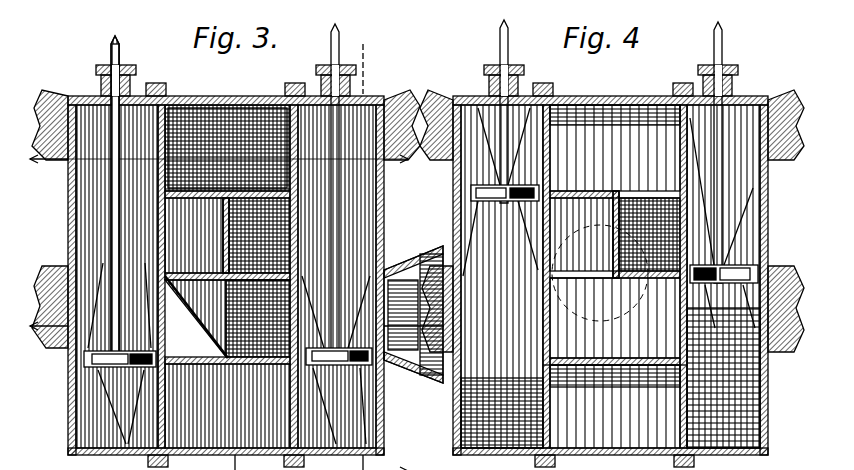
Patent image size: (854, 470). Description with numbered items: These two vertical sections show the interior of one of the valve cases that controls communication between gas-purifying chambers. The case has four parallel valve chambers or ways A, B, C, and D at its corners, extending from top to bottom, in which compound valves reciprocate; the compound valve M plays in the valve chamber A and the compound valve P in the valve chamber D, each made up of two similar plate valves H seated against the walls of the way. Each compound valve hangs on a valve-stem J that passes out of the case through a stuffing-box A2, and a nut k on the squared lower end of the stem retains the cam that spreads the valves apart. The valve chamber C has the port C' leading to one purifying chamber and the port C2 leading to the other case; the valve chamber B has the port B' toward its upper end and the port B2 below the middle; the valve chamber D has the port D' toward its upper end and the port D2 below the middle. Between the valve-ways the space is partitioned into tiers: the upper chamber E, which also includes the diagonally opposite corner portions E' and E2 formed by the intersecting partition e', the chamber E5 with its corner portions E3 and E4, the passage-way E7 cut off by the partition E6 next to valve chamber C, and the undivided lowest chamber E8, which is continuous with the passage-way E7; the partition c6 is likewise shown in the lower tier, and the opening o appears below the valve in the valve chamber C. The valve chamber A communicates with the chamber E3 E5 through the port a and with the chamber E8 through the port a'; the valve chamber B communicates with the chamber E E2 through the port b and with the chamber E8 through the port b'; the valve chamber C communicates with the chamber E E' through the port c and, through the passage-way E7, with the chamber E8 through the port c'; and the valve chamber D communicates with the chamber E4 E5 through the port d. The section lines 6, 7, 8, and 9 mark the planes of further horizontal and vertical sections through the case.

In FIG. 3, the section line 6- 6 is at (216, 160).
In FIG. 3, the section line 7- 7 is at (234, 329).
In FIG. 3, the section line 8- 8 is at (213, 90).
In FIG. 3, the section line 9- 9 is at (319, 247).
In FIG. 4, the valve chamber A is at (502, 276).
In FIG. 3, the stuffing-box A2 is at (130, 70).
In FIG. 4, the stuffing-box A2 is at (514, 74).
In FIG. 4, the valve chamber B is at (723, 276).
In FIG. 4, the port B' is at (786, 132).
In FIG. 4, the port B2 is at (786, 309).
In FIG. 3, the valve chamber C is at (117, 276).
In FIG. 3, the port c is at (122, 294).
In FIG. 3, the port C' is at (50, 138).
In FIG. 3, the port C2 is at (48, 352).
In FIG. 3, the port c' is at (196, 317).
In FIG. 3, the partition c6 is at (250, 318).
In FIG. 3, the valve chamber D is at (337, 276).
In FIG. 3, the port d is at (286, 237).
In FIG. 3, the port D' is at (402, 137).
In FIG. 3, the port D2 is at (413, 314).
In FIG. 3, the chamber E is at (227, 148).
In FIG. 4, the chamber E is at (615, 148).
In FIG. 3, the portion of chamber E E' is at (194, 235).
In FIG. 3, the partition e' is at (216, 235).
In FIG. 4, the partition e' is at (602, 234).
In FIG. 4, the portion of chamber E E2 is at (649, 234).
In FIG. 4, the portion of chamber E5 E3 is at (581, 234).
In FIG. 3, the portion of chamber E5 E4 is at (259, 235).
In FIG. 4, the chamber E5 is at (615, 318).
In FIG. 3, the partition E6 is at (258, 318).
In FIG. 3, the passage-way E7 is at (195, 318).
In FIG. 3, the chamber E8 is at (227, 406).
In FIG. 4, the chamber E8 is at (615, 406).
In FIG. 4, the valve H is at (436, 221).
In FIG. 3, the valve-stem J is at (231, 193).
In FIG. 4, the valve-stem J is at (500, 40).
In FIG. 3, the nut k is at (228, 372).
In FIG. 4, the nut k is at (718, 222).
In FIG. 4, the compound valve M is at (520, 246).
In FIG. 3, the opening o is at (134, 402).
In FIG. 3, the compound valve P is at (346, 403).
In FIG. 4, the port a is at (581, 268).
In FIG. 4, the port a' is at (560, 394).
In FIG. 4, the port b is at (649, 206).
In FIG. 4, the port b' is at (671, 393).